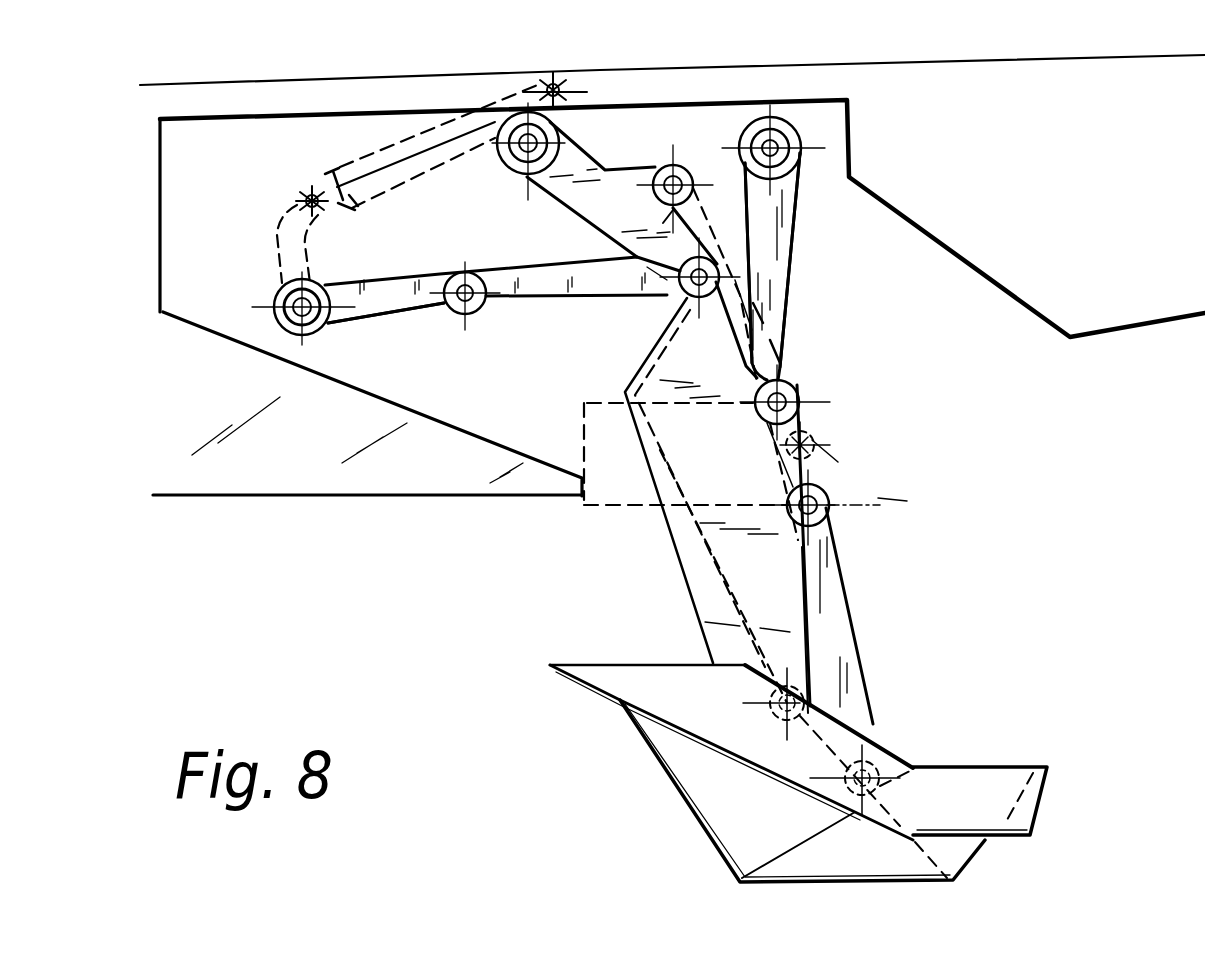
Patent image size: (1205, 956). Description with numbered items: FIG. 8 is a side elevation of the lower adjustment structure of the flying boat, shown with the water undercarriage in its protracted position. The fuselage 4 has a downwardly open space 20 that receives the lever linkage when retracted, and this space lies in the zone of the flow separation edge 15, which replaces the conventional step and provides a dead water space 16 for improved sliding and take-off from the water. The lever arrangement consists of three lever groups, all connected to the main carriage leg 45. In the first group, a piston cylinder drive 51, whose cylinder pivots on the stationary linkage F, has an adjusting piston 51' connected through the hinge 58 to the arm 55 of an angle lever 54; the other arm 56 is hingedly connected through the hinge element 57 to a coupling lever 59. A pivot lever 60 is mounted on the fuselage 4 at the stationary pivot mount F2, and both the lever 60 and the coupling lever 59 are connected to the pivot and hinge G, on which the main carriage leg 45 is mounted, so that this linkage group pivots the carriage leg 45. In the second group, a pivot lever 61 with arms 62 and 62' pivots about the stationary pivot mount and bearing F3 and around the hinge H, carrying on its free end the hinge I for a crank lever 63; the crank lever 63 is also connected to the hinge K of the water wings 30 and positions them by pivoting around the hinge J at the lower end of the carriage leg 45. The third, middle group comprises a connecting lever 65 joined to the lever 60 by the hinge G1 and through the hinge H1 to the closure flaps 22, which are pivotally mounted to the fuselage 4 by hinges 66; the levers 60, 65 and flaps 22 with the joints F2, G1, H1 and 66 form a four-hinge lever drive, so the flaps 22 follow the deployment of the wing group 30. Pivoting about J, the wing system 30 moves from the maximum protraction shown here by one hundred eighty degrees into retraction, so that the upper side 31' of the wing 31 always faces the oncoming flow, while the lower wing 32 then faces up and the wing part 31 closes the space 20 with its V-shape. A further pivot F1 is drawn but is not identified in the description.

The fuselage 4 is at (293, 470).
The flow separation edge 15 is at (840, 464).
The dead water space 16 is at (1043, 357).
The open space 20 is at (505, 423).
The closure flaps 22 is at (878, 498).
The water wings 30 is at (920, 732).
The wing 31 is at (722, 752).
The upper side of the wing 31' is at (718, 690).
The lower wing 32 is at (713, 808).
The main carriage leg 45 is at (745, 548).
The piston cylinder drive 51 is at (399, 118).
The adjusting piston 51' is at (416, 154).
The angle lever 54 is at (335, 261).
The arm of the angle lever 55 is at (287, 242).
The arm of the angle lever 56 is at (380, 303).
The hinge element 57 is at (473, 313).
The hinge 58 is at (290, 197).
The coupling lever 59 is at (582, 292).
The pivot lever 60 is at (583, 197).
The pivot lever 61 is at (803, 323).
The arm of the pivot lever 62 is at (884, 429).
The arm of the pivot lever 62' is at (780, 624).
The crank lever 63 is at (840, 630).
The connecting lever 65 is at (688, 228).
The hinges 66 is at (580, 436).
The stationary linkage F is at (551, 78).
The pivot F1 is at (285, 325).
The stationary pivot mount F2 is at (493, 113).
The stationary pivot mount and bearing F3 is at (800, 148).
The pivot and hinge G is at (697, 309).
The hinge G1 is at (673, 172).
The hinge H is at (800, 390).
The hinge H1 is at (820, 437).
The hinge I is at (870, 488).
The hinge J is at (813, 690).
The hinge K is at (873, 783).